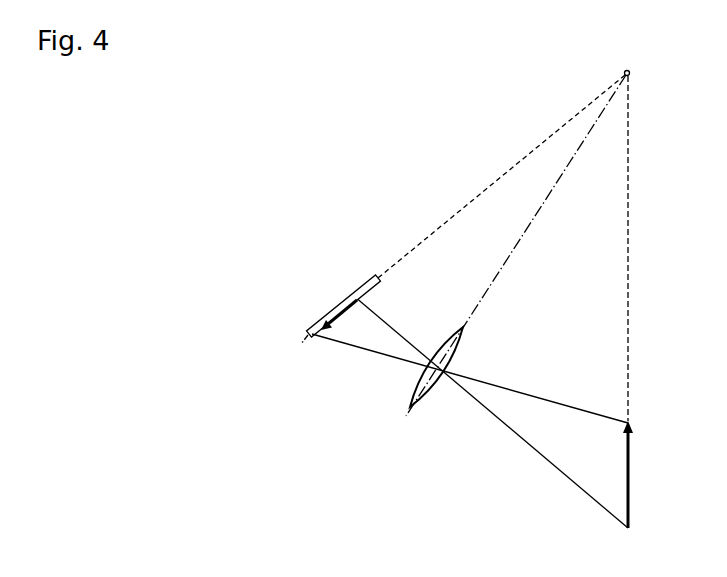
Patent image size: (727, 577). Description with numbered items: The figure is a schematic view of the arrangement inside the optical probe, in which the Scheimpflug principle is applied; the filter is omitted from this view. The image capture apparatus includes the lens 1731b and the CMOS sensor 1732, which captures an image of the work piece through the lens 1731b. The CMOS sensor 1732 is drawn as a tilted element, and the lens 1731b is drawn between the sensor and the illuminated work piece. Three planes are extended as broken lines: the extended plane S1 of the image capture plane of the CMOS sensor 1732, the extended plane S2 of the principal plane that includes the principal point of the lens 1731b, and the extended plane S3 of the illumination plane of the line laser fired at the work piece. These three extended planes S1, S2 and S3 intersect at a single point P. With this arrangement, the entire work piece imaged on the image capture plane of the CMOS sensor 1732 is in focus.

The CMOS sensor 1732 is at (307, 329).
The lens 1731b is at (410, 406).
The single point P is at (630, 72).
The extended plane of the image capture plane S1 is at (487, 186).
The extended plane of the principal plane S2 is at (509, 258).
The extended plane of the illumination plane S3 is at (630, 238).